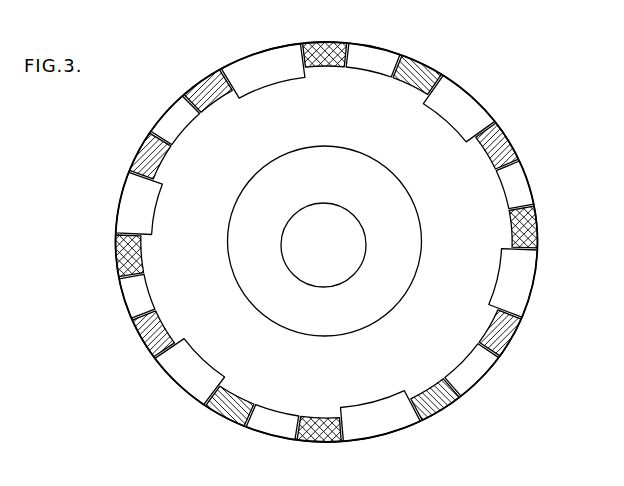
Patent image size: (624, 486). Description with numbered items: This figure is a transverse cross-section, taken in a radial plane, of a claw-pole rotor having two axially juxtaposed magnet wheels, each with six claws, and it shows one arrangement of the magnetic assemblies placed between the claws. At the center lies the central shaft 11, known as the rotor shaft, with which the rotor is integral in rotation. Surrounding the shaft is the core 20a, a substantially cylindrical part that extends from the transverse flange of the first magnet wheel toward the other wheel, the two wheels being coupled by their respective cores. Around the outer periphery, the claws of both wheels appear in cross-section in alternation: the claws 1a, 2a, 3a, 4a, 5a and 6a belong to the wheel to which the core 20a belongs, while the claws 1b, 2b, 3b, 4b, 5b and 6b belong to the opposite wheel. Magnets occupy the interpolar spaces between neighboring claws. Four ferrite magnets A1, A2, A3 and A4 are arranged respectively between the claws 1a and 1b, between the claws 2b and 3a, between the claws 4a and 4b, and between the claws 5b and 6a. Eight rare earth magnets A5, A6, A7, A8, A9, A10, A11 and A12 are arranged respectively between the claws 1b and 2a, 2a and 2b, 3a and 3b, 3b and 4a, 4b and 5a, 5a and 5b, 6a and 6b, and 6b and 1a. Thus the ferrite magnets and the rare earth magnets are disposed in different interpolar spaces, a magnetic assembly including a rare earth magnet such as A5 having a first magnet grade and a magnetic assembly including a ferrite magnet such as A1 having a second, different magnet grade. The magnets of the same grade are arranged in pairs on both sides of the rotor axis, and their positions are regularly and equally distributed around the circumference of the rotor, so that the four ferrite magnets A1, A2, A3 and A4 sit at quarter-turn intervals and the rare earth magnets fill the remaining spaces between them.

The ferrite magnet A1 is at (342, 44).
The ferrite magnet A2 is at (535, 228).
The ferrite magnet A3 is at (325, 441).
The ferrite magnet A4 is at (115, 255).
The rare earth magnet A5 is at (405, 77).
The rare earth magnet A6 is at (508, 135).
The rare earth magnet A7 is at (508, 335).
The rare earth magnet A8 is at (438, 407).
The rare earth magnet A9 is at (230, 415).
The rare earth magnet A10 is at (142, 347).
The rare earth magnet A11 is at (150, 147).
The rare earth magnet A12 is at (210, 75).
The claw 1a is at (262, 72).
The claw 1b is at (373, 55).
The claw 2a is at (450, 100).
The claw 2b is at (508, 175).
The claw 3a is at (512, 282).
The claw 3b is at (465, 377).
The claw 4a is at (378, 418).
The claw 4b is at (277, 427).
The claw 5a is at (187, 377).
The claw 5b is at (135, 302).
The claw 6a is at (138, 205).
The claw 6b is at (177, 118).
The core 20a is at (352, 196).
The central shaft 11 is at (340, 248).